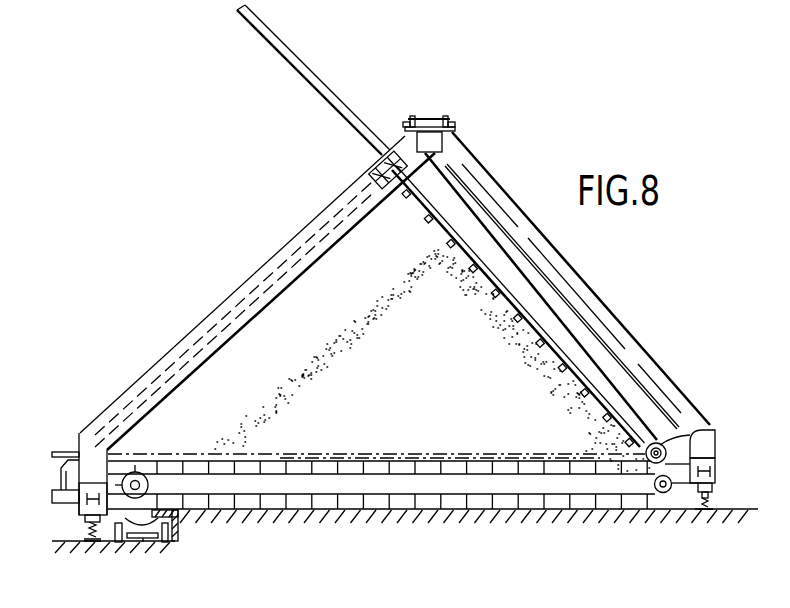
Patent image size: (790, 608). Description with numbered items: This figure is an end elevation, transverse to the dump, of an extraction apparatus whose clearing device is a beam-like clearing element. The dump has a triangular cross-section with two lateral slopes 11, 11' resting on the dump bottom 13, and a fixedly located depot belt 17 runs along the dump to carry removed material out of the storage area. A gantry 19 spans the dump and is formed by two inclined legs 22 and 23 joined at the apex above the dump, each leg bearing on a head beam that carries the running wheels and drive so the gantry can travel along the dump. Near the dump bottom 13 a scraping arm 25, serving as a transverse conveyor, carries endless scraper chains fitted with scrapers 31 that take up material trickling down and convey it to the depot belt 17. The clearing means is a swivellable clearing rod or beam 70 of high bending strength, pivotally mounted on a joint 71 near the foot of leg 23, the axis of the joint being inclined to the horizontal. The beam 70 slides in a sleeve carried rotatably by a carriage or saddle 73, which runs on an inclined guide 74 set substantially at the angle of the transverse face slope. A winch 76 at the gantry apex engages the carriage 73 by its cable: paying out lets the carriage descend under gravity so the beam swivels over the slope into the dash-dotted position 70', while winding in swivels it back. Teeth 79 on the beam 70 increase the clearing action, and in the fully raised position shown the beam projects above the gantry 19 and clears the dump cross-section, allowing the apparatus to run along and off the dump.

The lateral slope 11 is at (331, 349).
The lateral slope 11' is at (542, 363).
The dump bottom 13 is at (630, 512).
The depot belt 17 is at (140, 532).
The gantry 19 is at (281, 240).
The inclined leg 22 is at (268, 260).
The inclined leg 23 is at (677, 404).
The scraping arm 25 is at (289, 485).
The scrapers 31 is at (286, 470).
The clearing rod or beam 70 is at (508, 306).
The swivelled position of clearing rod or beam 70' is at (376, 434).
The joint 71 is at (716, 432).
The carriage or saddle 73 is at (372, 165).
The inclined guide 74 is at (232, 310).
The winch 76 is at (429, 116).
The teeth 79 is at (440, 227).